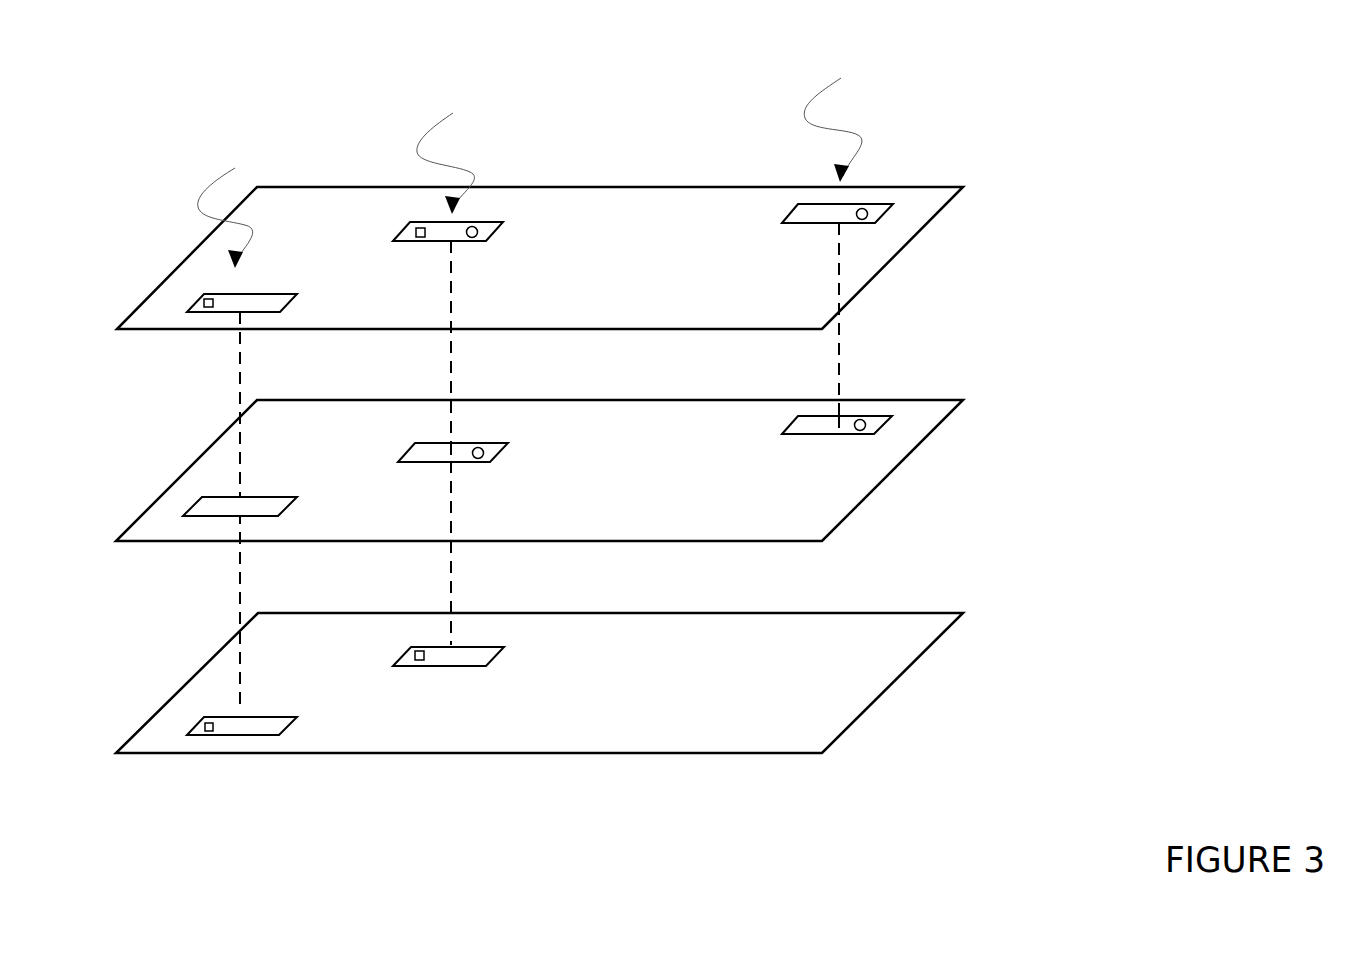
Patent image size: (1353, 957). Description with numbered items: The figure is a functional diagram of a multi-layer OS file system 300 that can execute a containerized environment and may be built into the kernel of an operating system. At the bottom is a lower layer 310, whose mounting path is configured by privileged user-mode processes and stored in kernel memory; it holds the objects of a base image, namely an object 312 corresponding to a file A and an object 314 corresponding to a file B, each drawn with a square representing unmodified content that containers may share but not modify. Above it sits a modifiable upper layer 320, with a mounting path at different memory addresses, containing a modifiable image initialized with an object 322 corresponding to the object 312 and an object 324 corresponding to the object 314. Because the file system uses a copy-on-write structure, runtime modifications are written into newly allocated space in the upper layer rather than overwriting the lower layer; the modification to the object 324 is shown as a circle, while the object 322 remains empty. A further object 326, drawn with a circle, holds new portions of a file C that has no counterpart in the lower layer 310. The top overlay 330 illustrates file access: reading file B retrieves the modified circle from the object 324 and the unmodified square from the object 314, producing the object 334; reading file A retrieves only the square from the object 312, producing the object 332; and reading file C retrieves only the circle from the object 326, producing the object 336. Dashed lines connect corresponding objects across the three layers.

The multi-layer OS file system 300 is at (1264, 816).
The lower layer 310 is at (898, 678).
The object 312 is at (187, 735).
The object 314 is at (393, 666).
The upper layer 320 is at (893, 472).
The object 322 is at (183, 516).
The object 324 is at (398, 462).
The object 326 is at (782, 434).
The overlay 330 is at (887, 263).
The object 332 is at (187, 312).
The object 334 is at (393, 241).
The object 336 is at (782, 223).